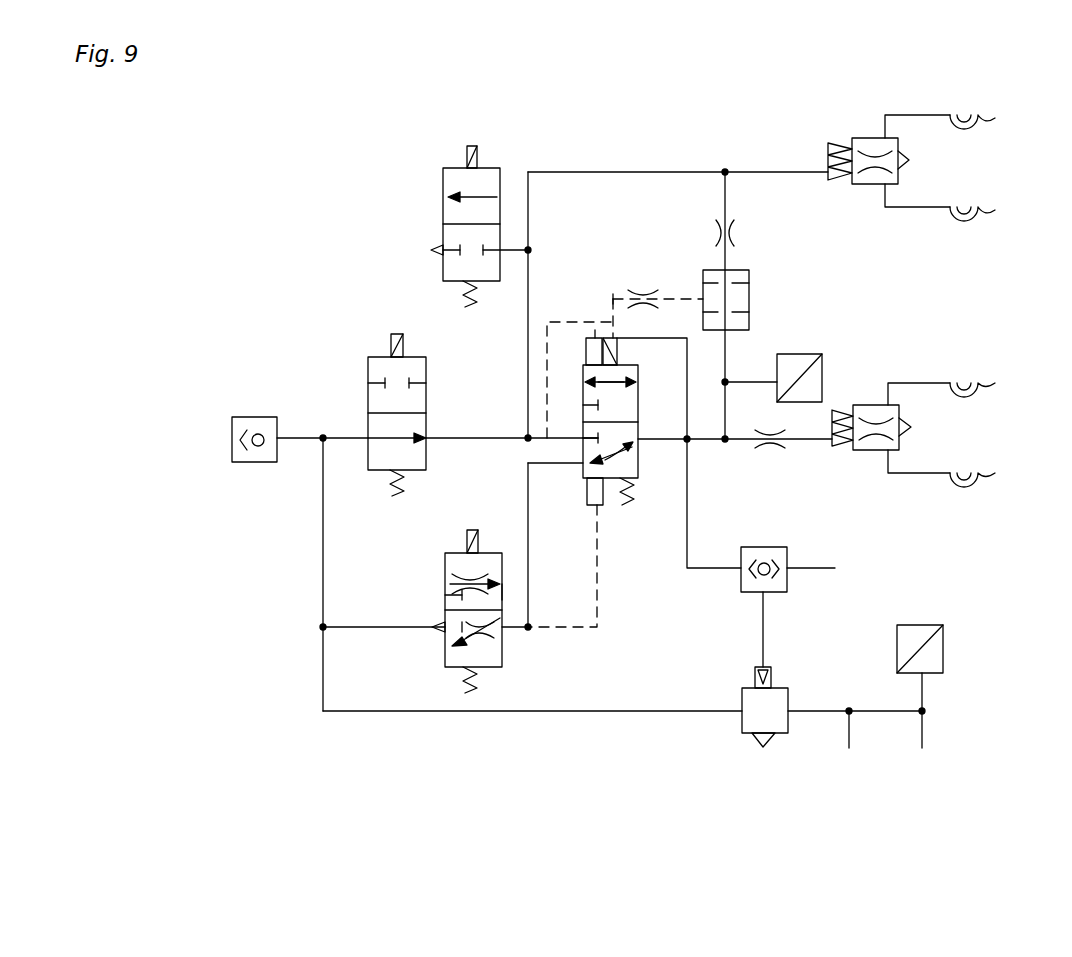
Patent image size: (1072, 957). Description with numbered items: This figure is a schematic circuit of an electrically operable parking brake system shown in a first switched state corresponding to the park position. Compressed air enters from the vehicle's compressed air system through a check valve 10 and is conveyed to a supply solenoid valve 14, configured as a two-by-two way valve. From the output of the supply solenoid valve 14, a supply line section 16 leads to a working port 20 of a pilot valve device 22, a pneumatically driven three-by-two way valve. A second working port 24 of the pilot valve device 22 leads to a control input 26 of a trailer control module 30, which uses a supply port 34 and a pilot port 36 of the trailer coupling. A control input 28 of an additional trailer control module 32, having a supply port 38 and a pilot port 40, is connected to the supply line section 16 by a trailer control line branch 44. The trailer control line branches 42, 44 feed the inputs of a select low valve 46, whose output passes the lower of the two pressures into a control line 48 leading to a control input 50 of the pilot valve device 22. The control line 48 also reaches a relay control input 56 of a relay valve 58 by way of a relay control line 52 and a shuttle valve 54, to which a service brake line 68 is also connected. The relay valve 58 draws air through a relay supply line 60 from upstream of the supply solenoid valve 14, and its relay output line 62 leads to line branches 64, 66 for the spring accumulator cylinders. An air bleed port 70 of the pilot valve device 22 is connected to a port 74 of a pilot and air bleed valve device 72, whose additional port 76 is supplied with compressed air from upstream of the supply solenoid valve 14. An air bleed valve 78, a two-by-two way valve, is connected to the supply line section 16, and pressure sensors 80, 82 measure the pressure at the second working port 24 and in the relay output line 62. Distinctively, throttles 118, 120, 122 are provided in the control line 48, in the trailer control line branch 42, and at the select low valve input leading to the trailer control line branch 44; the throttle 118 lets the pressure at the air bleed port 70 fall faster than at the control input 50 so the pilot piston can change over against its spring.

The check valve 10 is at (235, 463).
The supply solenoid valve 14 is at (368, 370).
The supply line section 16 is at (496, 430).
The working port 20 is at (570, 474).
The pilot valve device 22 is at (638, 462).
The second working port 24 is at (641, 377).
The control input 26 is at (843, 448).
The control input 28 is at (840, 182).
The trailer control module 30 is at (870, 405).
The additional trailer control module 32 is at (866, 138).
The supply port 34 is at (985, 385).
The pilot port 36 is at (985, 485).
The supply port 38 is at (988, 122).
The pilot port 40 is at (990, 216).
The trailer control line branch 42 is at (740, 443).
The trailer control line branch 44 is at (645, 165).
The select low valve 46 is at (749, 277).
The control line 48 is at (612, 301).
The control input 50 is at (612, 355).
The relay control line 52 is at (687, 555).
The shuttle valve 54 is at (765, 547).
The relay control input 56 is at (752, 672).
The relay valve 58 is at (740, 722).
The relay supply line 60 is at (600, 718).
The relay output line 62 is at (815, 708).
The line branch 64 is at (843, 745).
The line branch 66 is at (925, 732).
The service brake line 68 is at (820, 570).
The air bleed port 70 is at (578, 410).
The pilot and air bleed valve device 72 is at (502, 650).
The port 74 is at (505, 585).
The additional port 76 is at (445, 565).
The air bleed valve 78 is at (443, 182).
The pressure sensor 80 is at (822, 356).
The pressure sensor 82 is at (943, 640).
The throttle 118 is at (639, 285).
The throttle 120 is at (768, 455).
The throttle 122 is at (738, 232).